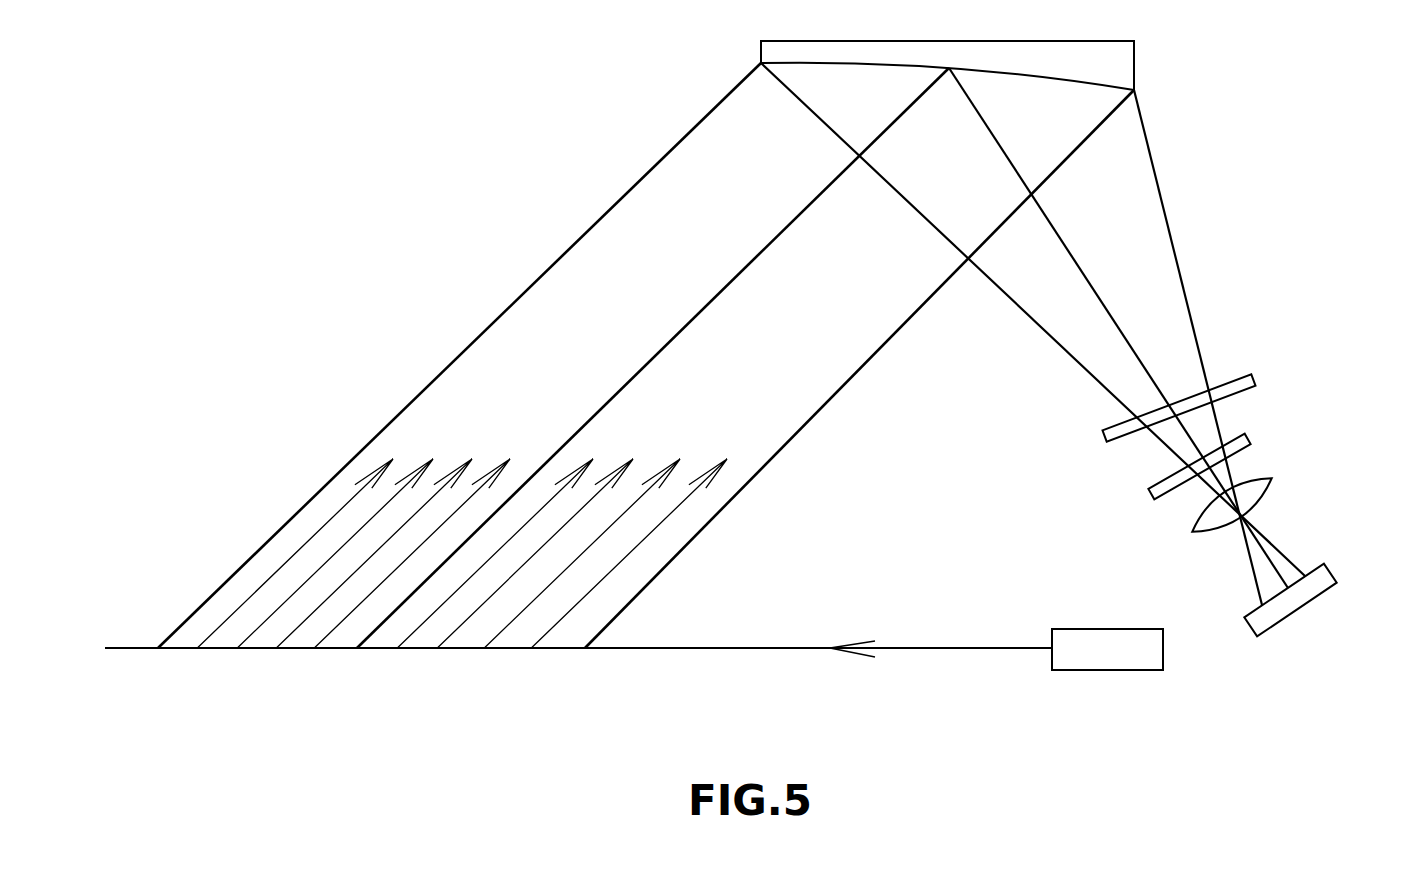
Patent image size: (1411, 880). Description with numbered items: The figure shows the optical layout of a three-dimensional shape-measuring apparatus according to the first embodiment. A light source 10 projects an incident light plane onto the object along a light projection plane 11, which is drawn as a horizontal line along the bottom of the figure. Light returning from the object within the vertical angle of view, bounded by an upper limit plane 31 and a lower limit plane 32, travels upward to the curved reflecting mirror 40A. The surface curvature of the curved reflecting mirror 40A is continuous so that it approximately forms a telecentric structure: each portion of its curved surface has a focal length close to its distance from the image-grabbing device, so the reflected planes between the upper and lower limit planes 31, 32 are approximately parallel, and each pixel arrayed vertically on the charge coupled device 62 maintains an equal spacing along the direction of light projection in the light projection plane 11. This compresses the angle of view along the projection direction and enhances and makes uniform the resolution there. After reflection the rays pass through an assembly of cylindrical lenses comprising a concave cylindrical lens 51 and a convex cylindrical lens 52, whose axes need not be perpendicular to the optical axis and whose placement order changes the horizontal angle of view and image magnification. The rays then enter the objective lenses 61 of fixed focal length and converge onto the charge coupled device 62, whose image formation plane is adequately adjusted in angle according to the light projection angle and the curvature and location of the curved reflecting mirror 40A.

The curved reflecting mirror 40A is at (1105, 63).
The upper limit plane 31 is at (637, 200).
The lower limit plane 32 is at (797, 350).
The concave cylindrical lens 51 is at (1247, 382).
The convex cylindrical lens 52 is at (1245, 438).
The objective lenses 61 is at (1250, 495).
The charge coupled device 62 is at (1318, 585).
The light projection plane 11 is at (690, 648).
The light source 10 is at (1113, 653).